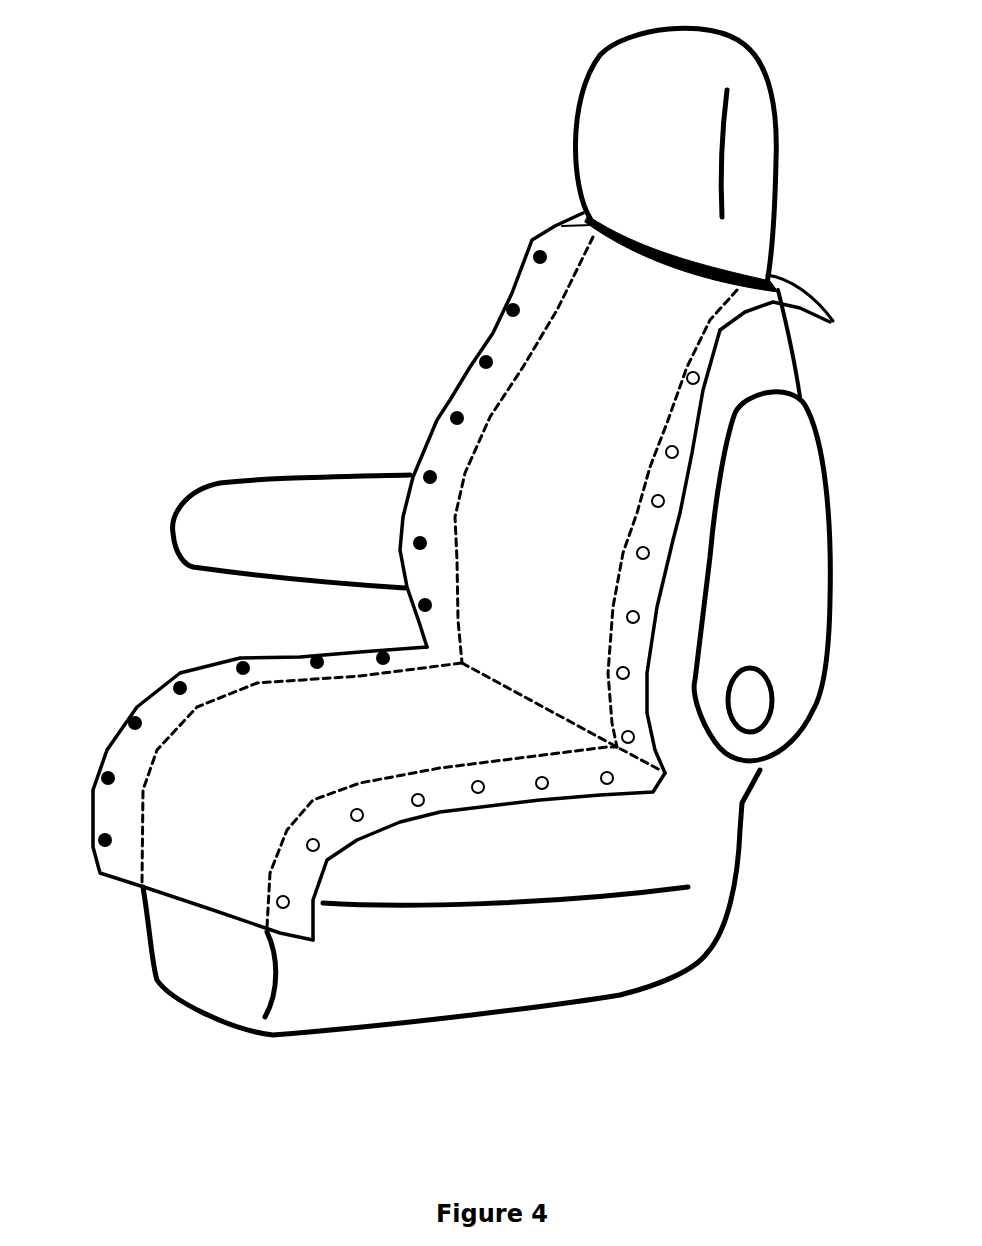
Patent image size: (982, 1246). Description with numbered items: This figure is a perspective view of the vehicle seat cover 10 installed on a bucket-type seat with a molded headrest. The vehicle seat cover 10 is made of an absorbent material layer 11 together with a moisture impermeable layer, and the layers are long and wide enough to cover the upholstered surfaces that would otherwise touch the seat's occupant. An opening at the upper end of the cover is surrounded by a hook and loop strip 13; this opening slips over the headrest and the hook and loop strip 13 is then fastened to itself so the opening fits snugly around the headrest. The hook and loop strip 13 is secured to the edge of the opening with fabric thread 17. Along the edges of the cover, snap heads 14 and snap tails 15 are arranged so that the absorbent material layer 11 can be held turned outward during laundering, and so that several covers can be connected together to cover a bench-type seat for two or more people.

The vehicle seat cover 10 is at (155, 650).
The absorbent material layer 11 is at (495, 728).
The hook and loop strip 13 is at (627, 257).
The snap head 14 is at (435, 420).
The snap tail 15 is at (283, 902).
The fabric thread 17 is at (590, 757).